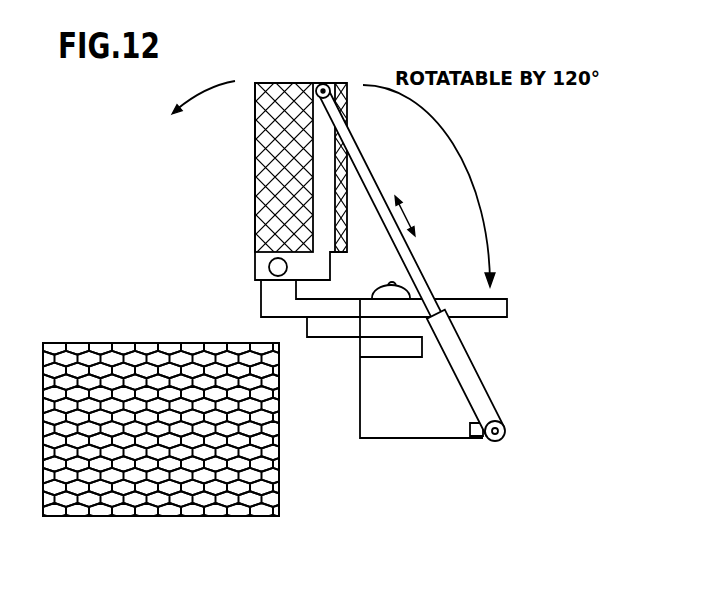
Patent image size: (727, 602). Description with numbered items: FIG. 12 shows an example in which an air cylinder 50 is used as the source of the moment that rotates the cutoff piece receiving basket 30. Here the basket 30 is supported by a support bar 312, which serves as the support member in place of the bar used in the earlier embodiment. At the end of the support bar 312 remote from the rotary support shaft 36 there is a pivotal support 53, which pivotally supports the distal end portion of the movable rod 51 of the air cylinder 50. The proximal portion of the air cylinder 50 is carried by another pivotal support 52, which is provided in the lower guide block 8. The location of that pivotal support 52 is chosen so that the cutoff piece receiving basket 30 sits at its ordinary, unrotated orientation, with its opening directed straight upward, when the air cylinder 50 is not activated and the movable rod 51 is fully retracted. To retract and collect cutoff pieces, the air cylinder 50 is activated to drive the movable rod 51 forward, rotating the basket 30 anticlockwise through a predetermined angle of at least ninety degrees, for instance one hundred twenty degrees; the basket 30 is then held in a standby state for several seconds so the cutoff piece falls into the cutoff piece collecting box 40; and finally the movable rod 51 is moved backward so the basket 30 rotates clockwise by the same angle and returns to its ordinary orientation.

The lower guide block 8 is at (405, 440).
The cutoff piece receiving basket 30 is at (262, 202).
The support bar 312 is at (315, 132).
The rotary support shaft 36 is at (269, 267).
The cutoff piece collecting box 40 is at (165, 505).
The air cylinder 50 is at (482, 352).
The movable rod 51 is at (378, 187).
The pivotal support 52 is at (494, 442).
The pivotal support 53 is at (323, 84).